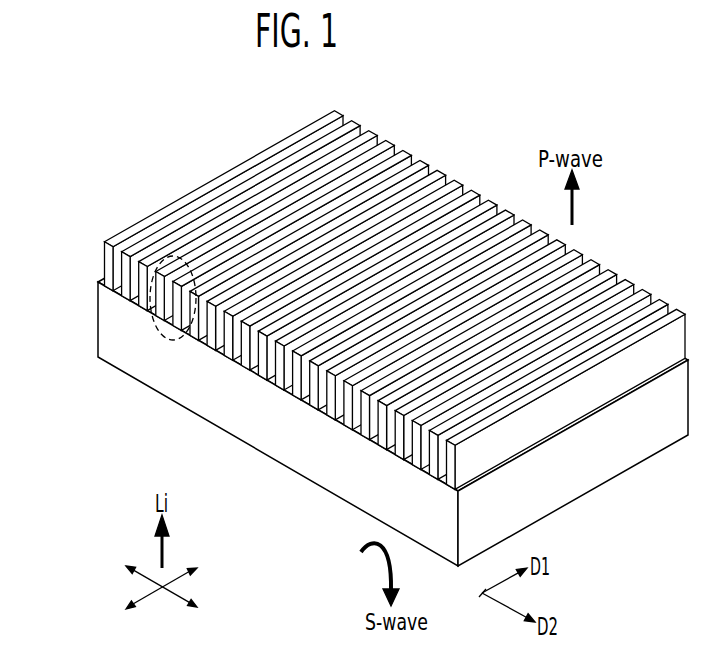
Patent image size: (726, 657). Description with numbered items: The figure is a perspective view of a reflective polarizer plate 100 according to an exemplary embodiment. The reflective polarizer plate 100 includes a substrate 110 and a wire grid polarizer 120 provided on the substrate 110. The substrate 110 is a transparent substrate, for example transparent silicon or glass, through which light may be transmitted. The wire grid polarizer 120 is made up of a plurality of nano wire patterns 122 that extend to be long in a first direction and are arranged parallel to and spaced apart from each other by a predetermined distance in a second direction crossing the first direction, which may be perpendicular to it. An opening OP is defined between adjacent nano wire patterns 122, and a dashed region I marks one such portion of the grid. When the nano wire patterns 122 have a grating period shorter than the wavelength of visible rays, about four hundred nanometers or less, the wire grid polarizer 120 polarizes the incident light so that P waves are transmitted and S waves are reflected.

The reflective polarizer plate 100 is at (355, 312).
The substrate 110 is at (99, 336).
The wire grid polarizer 120 is at (354, 300).
The nano wire patterns 122 is at (224, 357).
The opening OP is at (126, 299).
The enlarged region I is at (157, 340).